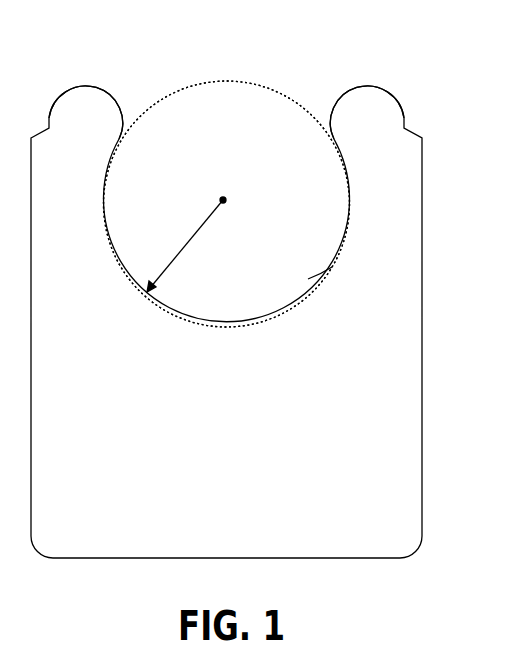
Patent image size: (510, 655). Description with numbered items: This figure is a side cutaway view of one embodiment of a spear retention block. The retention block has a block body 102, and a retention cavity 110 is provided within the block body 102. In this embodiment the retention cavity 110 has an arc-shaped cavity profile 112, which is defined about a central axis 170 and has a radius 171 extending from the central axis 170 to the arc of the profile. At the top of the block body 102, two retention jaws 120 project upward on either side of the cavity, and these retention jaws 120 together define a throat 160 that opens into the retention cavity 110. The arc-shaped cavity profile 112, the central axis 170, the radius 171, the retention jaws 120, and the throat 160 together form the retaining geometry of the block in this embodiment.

The block body 102 is at (108, 359).
The retention cavity 110 is at (309, 191).
The arc-shaped cavity profile 112 is at (320, 285).
The retention jaws 120 is at (97, 108).
The throat 160 is at (242, 120).
The central axis 170 is at (225, 203).
The radius 171 is at (190, 242).